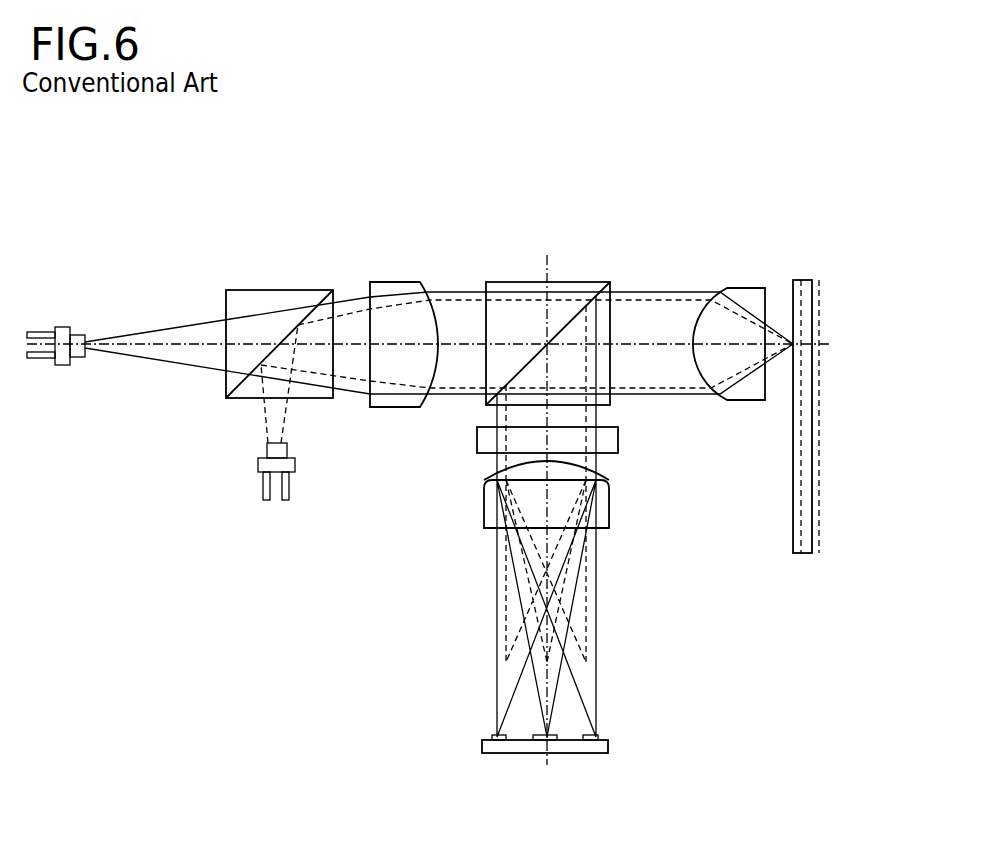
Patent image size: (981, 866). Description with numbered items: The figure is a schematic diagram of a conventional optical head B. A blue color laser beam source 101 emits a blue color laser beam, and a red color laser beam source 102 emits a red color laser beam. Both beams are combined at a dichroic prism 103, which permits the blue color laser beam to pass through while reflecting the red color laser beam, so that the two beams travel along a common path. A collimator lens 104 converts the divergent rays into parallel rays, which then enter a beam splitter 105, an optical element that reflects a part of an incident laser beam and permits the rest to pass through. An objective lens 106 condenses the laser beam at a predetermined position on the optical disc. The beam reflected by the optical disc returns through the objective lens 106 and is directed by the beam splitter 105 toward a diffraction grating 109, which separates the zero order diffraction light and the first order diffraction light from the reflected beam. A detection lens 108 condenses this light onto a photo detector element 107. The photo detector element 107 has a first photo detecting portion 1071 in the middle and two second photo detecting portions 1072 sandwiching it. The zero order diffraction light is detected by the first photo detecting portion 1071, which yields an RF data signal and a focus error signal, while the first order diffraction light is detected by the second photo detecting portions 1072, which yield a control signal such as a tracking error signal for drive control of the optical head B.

The optical head B is at (200, 273).
The blue color laser beam source 101 is at (66, 364).
The red color laser beam source 102 is at (257, 462).
The dichroic prism 103 is at (268, 300).
The collimator lens 104 is at (393, 290).
The beam splitter 105 is at (510, 285).
The objective lens 106 is at (758, 290).
The photo detector element 107 is at (515, 750).
The first photo detecting portion 1071 is at (548, 745).
The second photo detecting portion 1072 is at (492, 736).
The detection lens 108 is at (493, 508).
The diffraction grating 109 is at (612, 438).